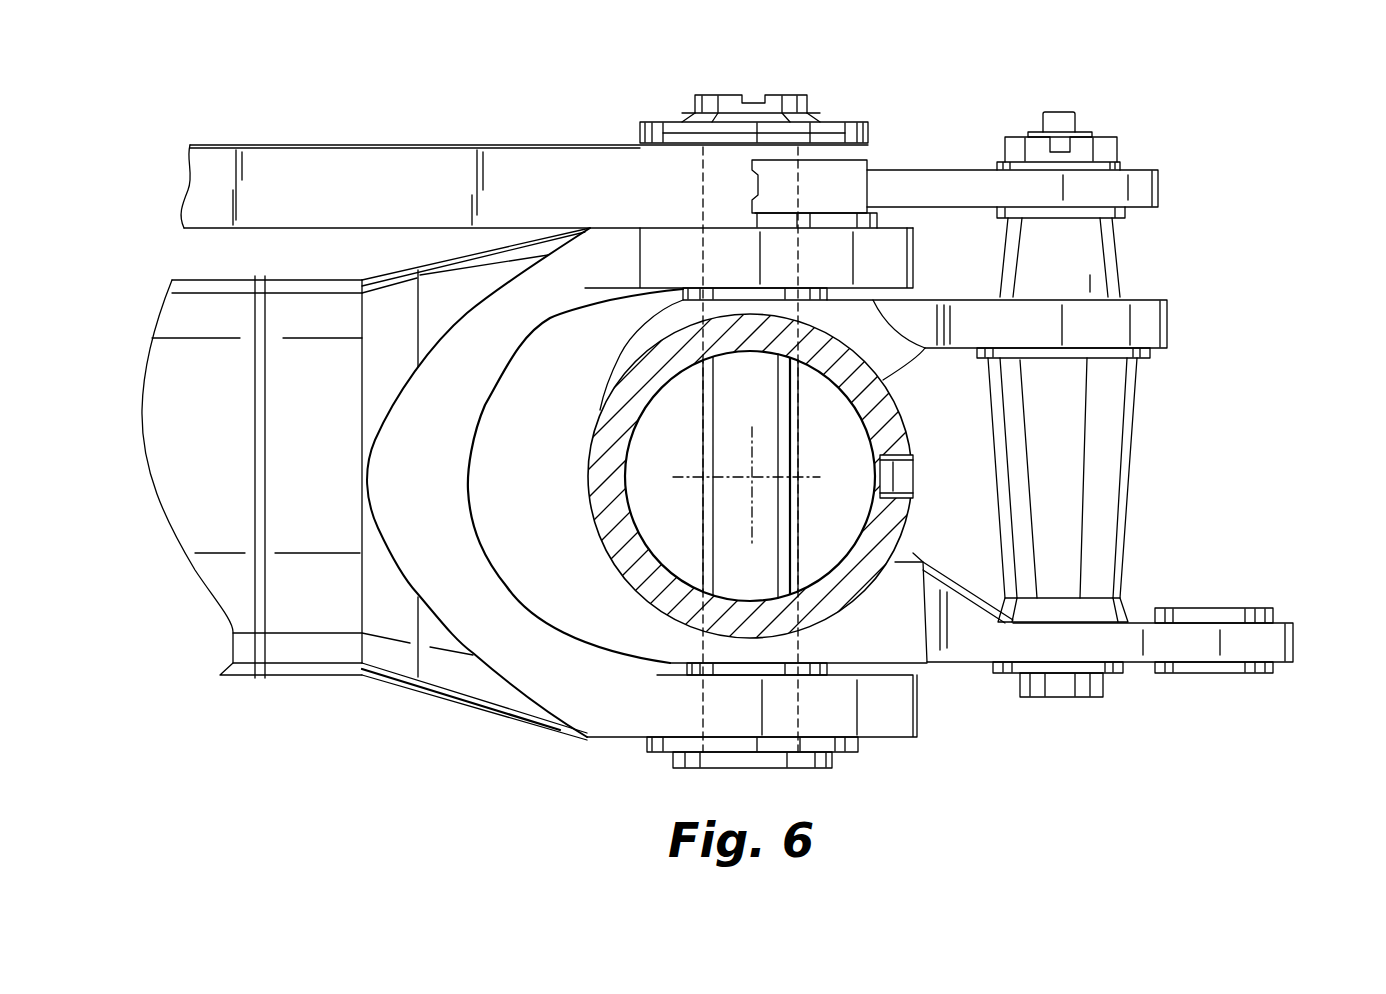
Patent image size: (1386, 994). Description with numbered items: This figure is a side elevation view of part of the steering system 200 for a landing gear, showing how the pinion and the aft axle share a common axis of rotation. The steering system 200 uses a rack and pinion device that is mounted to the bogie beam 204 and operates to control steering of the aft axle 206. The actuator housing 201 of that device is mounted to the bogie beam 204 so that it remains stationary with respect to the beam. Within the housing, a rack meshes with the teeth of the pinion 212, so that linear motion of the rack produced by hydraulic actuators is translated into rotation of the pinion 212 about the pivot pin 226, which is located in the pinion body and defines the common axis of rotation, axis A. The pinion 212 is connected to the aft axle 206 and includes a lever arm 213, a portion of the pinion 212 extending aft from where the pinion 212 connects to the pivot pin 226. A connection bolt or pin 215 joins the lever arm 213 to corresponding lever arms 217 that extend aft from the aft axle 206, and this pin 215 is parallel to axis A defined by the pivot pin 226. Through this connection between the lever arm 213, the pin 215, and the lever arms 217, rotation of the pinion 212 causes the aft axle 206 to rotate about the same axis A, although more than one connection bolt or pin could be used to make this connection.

The steering system 200 is at (500, 86).
The actuator housing 201 is at (342, 185).
The bogie beam 204 is at (305, 623).
The aft axle 206 is at (598, 513).
The pinion 212 is at (765, 178).
The lever arm 213 is at (963, 182).
The connection bolt or pin 215 is at (1128, 467).
The lever arms 217 is at (1170, 318).
The pivot pin 226 is at (773, 500).